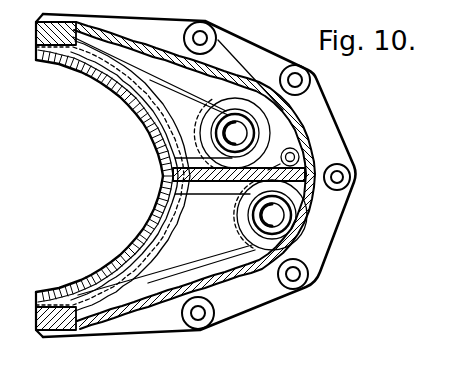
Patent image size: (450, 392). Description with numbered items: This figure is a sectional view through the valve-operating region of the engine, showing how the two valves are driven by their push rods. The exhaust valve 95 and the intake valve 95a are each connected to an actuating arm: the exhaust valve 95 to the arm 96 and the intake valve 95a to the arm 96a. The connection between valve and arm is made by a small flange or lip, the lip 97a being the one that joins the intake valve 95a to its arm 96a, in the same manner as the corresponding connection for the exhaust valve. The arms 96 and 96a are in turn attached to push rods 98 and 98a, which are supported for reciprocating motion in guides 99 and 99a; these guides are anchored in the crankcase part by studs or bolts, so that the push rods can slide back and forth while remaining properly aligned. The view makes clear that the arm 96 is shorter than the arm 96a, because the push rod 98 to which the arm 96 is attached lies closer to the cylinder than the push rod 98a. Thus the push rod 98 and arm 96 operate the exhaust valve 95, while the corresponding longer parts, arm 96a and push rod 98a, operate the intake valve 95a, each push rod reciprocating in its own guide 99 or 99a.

The exhaust valve 95 is at (157, 134).
The intake valve 95a is at (157, 228).
The arm 96 is at (190, 100).
The arm 96a is at (210, 244).
The flange or lip 97a is at (135, 245).
The push rod 98 is at (255, 137).
The push rod 98a is at (282, 223).
The guide 99 is at (268, 115).
The guide 99a is at (287, 296).